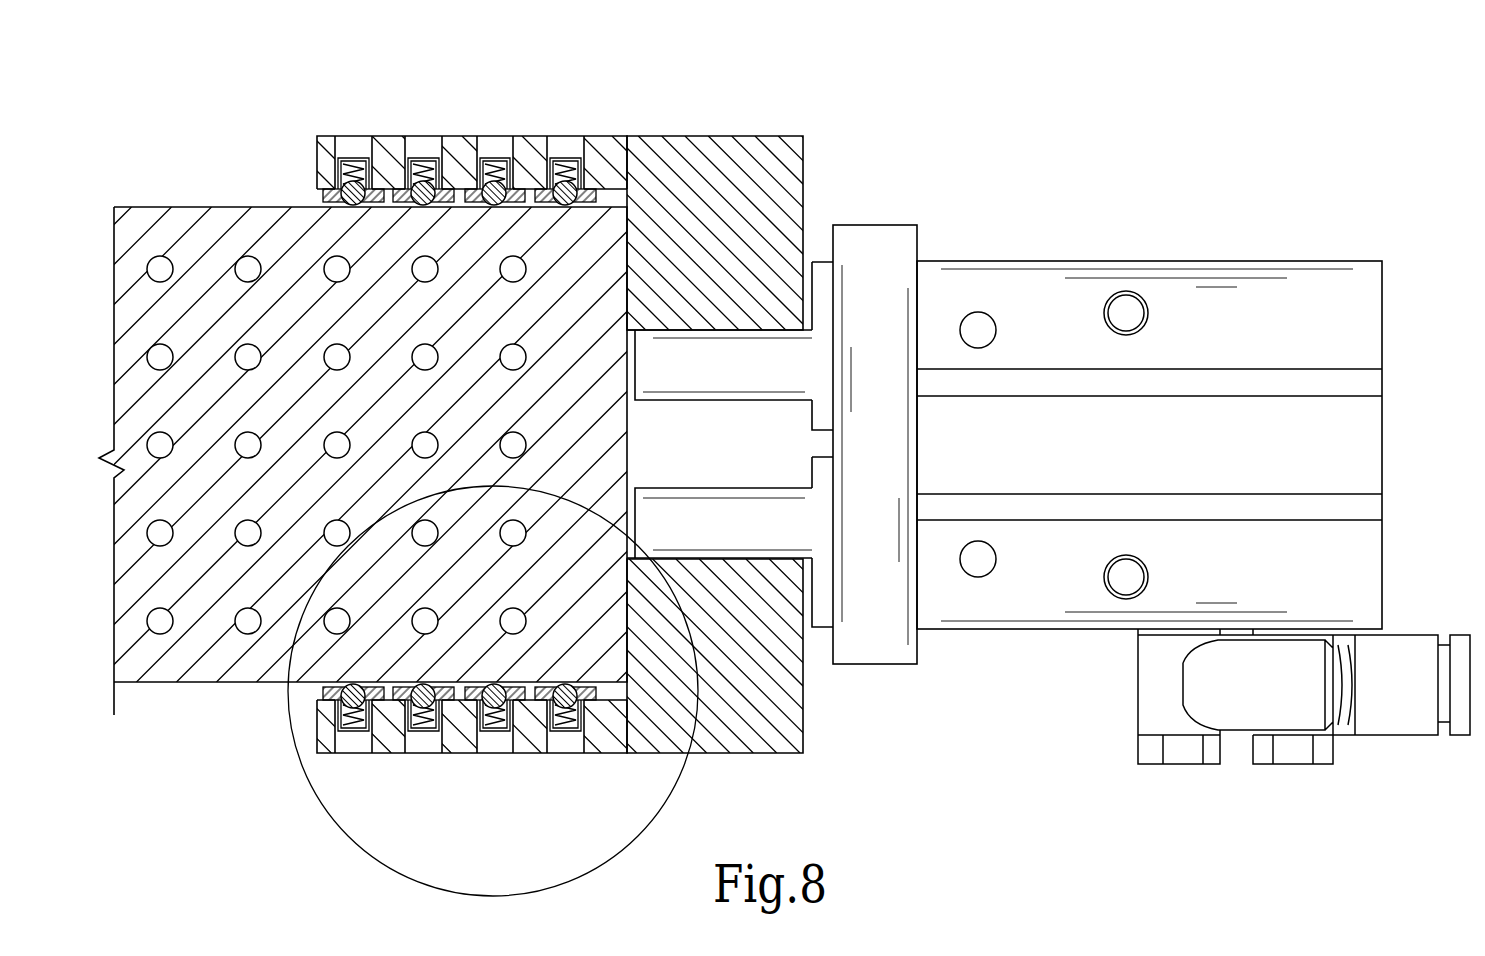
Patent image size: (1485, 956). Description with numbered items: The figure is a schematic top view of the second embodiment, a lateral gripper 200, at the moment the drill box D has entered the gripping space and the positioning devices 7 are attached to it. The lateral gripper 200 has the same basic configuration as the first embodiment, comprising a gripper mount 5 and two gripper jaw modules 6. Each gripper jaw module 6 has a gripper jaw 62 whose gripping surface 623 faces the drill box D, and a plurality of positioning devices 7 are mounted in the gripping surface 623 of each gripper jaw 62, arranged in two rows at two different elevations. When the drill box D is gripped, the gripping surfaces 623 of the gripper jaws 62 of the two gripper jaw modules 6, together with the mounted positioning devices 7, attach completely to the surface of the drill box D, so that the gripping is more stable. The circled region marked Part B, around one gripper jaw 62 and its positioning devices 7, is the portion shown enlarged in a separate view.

The gripper mount 5 is at (1175, 283).
The gripper jaw module 6 is at (805, 217).
The positioning device 7 is at (315, 188).
The gripper jaw 62 is at (395, 137).
The gripping surface 623 is at (530, 185).
The lateral gripper 200 is at (950, 208).
The drill box D is at (215, 220).
The Part B is at (285, 728).